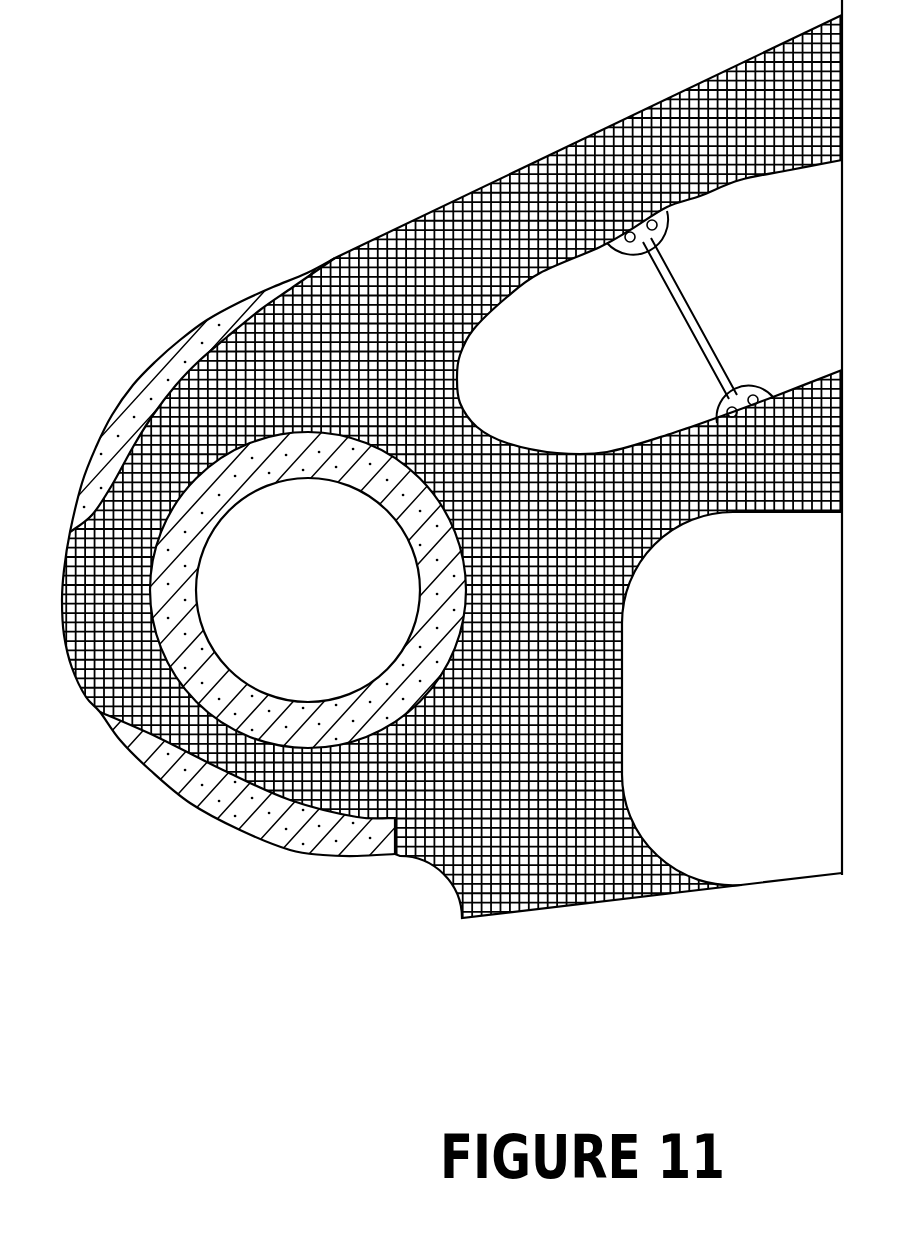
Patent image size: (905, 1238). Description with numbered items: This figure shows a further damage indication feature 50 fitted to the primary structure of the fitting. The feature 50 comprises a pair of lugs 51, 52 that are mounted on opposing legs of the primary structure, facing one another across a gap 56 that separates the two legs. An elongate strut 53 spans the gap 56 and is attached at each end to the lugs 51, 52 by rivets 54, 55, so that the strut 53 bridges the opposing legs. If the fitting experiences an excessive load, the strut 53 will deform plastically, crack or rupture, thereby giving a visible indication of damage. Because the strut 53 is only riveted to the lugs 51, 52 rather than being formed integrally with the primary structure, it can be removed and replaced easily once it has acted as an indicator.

The damage indication feature 50 is at (657, 317).
The lug 51 is at (664, 228).
The lug 52 is at (719, 414).
The elongate strut 53 is at (712, 341).
The rivet 54 is at (628, 254).
The rivet 55 is at (756, 389).
The gap 56 is at (802, 279).